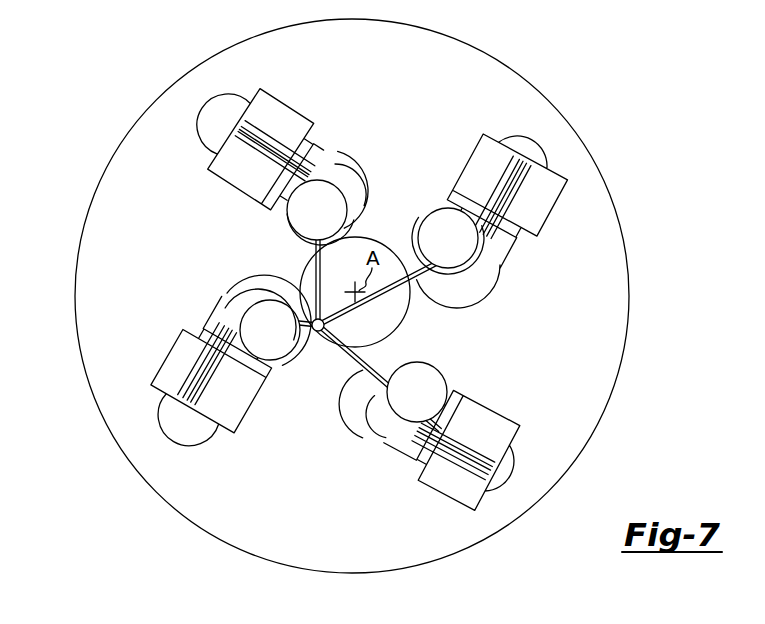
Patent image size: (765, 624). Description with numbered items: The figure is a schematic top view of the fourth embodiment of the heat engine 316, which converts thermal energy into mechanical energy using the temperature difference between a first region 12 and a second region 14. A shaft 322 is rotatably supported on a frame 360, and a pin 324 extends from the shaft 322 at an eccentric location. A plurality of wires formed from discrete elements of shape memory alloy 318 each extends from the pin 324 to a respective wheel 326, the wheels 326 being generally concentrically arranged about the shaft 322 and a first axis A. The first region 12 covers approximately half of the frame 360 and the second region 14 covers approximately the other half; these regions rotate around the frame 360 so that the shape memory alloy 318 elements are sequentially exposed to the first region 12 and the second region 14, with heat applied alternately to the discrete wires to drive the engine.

The first region 12 is at (52, 361).
The second region 14 is at (656, 168).
The heat engine 316 is at (100, 60).
The shape memory alloy 318 is at (322, 277).
The shaft 322 is at (372, 235).
The pin 324 is at (313, 333).
The wheel 326 is at (297, 210).
The frame 360 is at (527, 78).